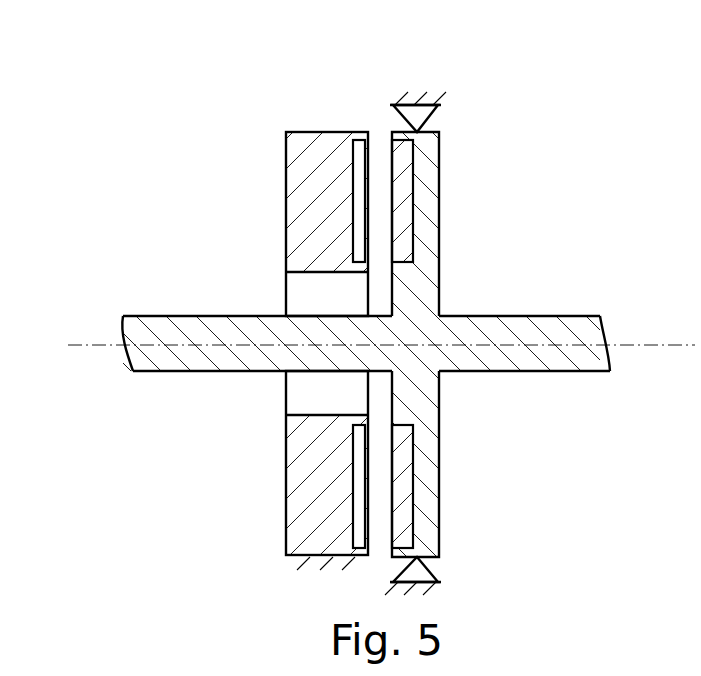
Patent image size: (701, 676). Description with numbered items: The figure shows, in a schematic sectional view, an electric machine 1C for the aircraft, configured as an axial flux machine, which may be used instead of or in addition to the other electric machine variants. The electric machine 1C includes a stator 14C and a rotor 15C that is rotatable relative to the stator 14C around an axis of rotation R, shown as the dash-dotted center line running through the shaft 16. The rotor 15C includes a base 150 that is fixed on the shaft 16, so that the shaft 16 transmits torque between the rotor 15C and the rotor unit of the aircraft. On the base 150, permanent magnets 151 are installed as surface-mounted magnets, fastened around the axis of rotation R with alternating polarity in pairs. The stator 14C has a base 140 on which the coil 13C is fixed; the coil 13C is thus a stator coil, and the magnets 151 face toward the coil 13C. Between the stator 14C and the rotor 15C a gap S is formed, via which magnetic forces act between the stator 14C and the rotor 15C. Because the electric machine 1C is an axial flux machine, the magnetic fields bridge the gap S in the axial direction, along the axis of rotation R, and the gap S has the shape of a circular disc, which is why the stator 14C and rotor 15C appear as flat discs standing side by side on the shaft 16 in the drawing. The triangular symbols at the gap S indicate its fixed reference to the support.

The electric machine 1C is at (260, 138).
The coil 13C is at (360, 138).
The gap S is at (378, 130).
The stator 14C is at (280, 192).
The magnets 151 is at (403, 172).
The rotor 15C is at (446, 213).
The axis of rotation R is at (95, 345).
The shaft 16 is at (208, 333).
The base 140 is at (315, 463).
The base 150 is at (428, 483).